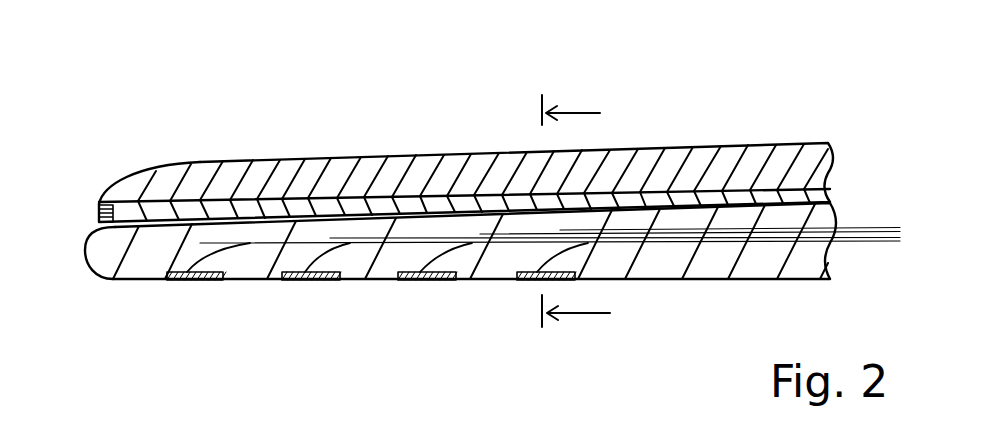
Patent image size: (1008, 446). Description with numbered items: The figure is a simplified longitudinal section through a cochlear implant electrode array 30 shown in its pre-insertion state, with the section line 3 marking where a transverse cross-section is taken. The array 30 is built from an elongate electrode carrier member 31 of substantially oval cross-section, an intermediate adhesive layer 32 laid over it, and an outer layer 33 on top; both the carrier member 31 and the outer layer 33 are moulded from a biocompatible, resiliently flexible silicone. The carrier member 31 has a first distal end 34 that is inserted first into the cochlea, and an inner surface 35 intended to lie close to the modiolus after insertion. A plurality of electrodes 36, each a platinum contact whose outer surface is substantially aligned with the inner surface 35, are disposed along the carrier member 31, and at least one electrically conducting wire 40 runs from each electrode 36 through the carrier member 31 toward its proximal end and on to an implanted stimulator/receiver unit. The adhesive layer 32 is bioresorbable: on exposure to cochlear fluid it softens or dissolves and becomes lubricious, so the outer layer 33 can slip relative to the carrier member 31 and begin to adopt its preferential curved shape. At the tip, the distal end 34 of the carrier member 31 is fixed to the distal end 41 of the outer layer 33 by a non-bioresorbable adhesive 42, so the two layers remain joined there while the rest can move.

The cochlear implant electrode array 30 is at (184, 119).
The elongate electrode carrier member 31 is at (710, 281).
The intermediate adhesive layer 32 is at (379, 198).
The outer layer 33 is at (722, 145).
The first distal end 34 is at (86, 265).
The inner surface 35 is at (362, 283).
The electrodes 36 is at (196, 282).
The electrically conducting wire 40 is at (249, 244).
The distal end of the outer layer 41 is at (113, 193).
The non-bioresorbable adhesive 42 is at (97, 217).
The section line for FIG. 3 is at (589, 214).